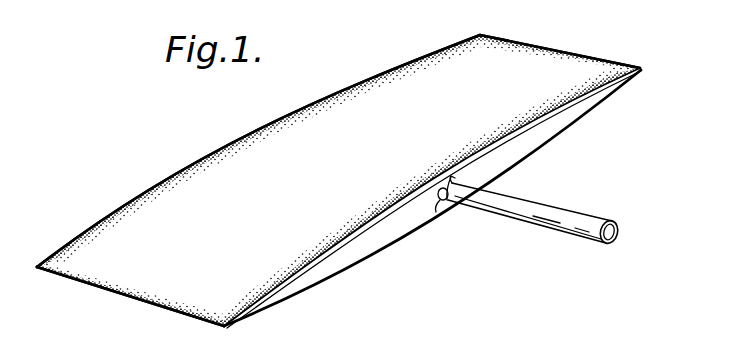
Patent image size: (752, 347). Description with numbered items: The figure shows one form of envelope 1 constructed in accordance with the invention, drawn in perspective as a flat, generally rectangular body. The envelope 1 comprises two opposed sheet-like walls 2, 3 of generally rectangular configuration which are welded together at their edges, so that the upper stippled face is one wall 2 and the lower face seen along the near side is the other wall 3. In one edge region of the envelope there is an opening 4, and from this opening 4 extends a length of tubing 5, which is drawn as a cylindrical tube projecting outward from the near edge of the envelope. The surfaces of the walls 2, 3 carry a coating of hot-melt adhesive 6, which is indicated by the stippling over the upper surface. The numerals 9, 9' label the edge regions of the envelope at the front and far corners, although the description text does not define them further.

The envelope 1 is at (250, 133).
The sheet-like wall 2 is at (423, 57).
The sheet-like wall 3 is at (305, 277).
The opening 4 is at (441, 203).
The length of tubing 5 is at (569, 214).
The coating of hot-melt adhesive 6 is at (147, 232).
The edge border 9 is at (130, 305).
The edge border 9' is at (560, 38).